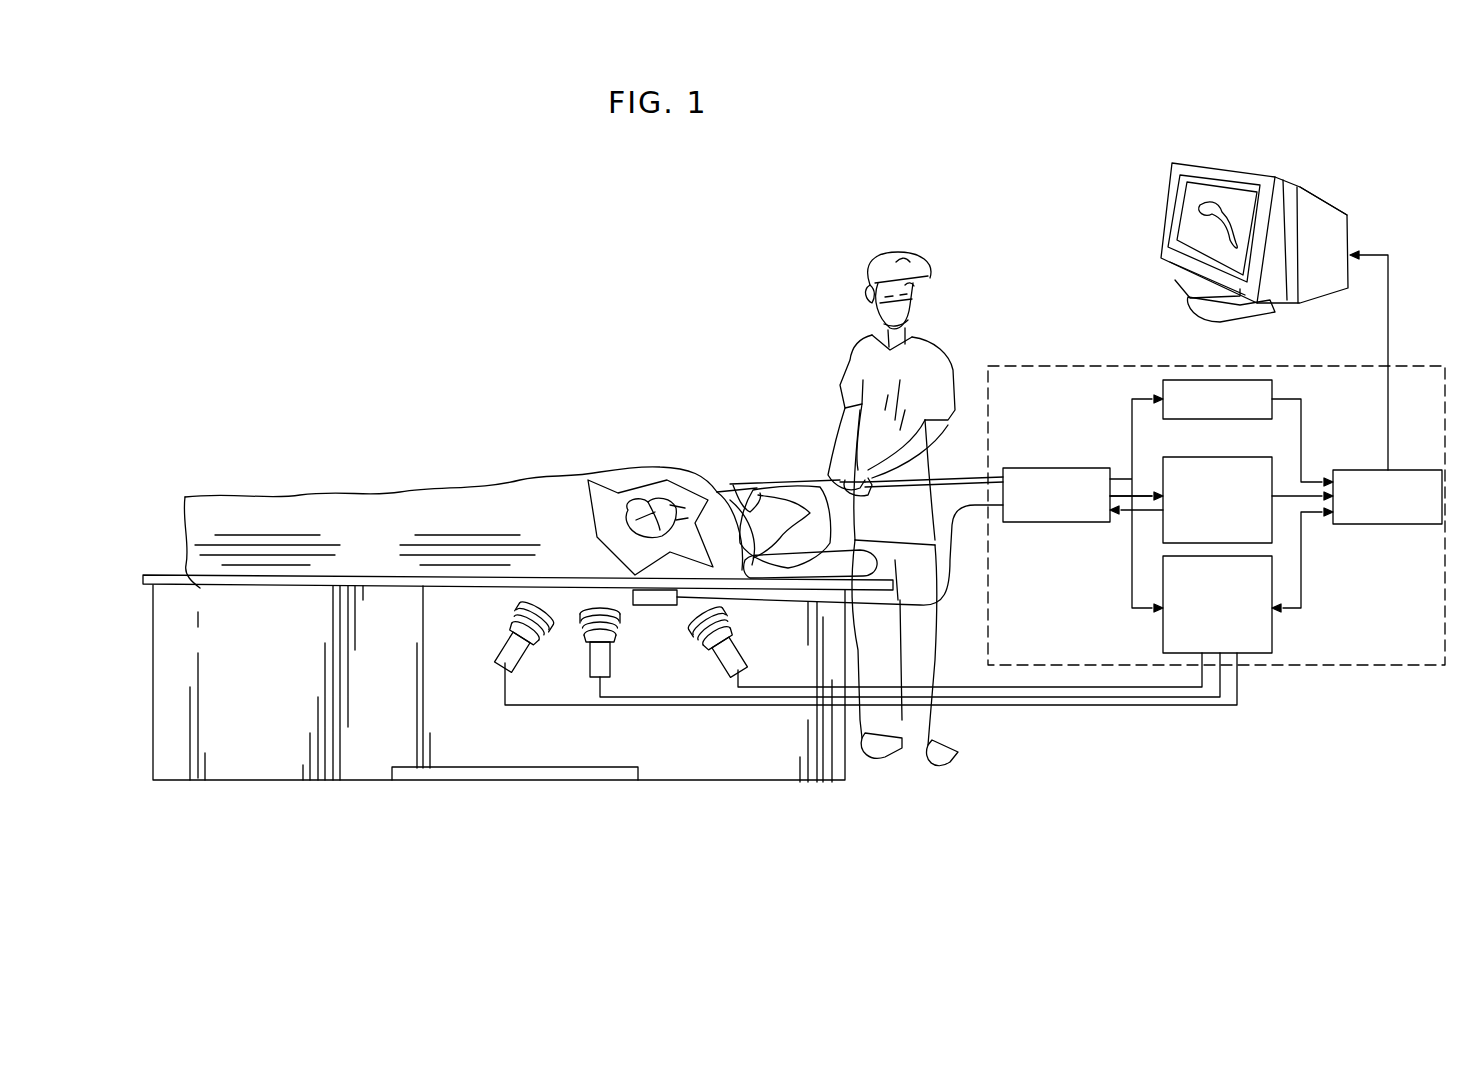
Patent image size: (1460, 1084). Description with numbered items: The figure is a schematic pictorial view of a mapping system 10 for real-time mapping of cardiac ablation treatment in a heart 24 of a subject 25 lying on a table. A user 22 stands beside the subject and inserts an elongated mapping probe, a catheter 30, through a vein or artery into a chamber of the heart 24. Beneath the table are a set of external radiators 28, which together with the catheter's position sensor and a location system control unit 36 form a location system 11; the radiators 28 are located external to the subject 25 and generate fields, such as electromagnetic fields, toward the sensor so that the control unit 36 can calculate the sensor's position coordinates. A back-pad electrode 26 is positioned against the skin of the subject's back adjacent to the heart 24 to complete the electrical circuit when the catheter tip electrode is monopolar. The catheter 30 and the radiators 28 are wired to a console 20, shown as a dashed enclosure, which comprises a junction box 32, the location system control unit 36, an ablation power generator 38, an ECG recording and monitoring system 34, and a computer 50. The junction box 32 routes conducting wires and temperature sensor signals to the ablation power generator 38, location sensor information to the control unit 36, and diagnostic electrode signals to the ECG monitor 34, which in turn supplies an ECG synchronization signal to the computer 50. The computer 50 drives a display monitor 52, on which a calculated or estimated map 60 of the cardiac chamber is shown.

The mapping system 10 is at (1015, 179).
The location system 11 is at (980, 738).
The console 20 is at (1038, 365).
The user 22 is at (862, 376).
The heart 24 is at (660, 480).
The subject 25 is at (396, 495).
The back-pad electrode 26 is at (660, 605).
The external radiators 28 is at (510, 650).
The catheter 30 is at (618, 520).
The junction box 32 is at (1062, 468).
The ECG monitor 34 is at (1185, 380).
The location system control unit 36 is at (1163, 626).
The ablation power generator 38 is at (1200, 457).
The computer 50 is at (1425, 524).
The display monitor 52 is at (1166, 210).
The map 60 is at (1210, 210).